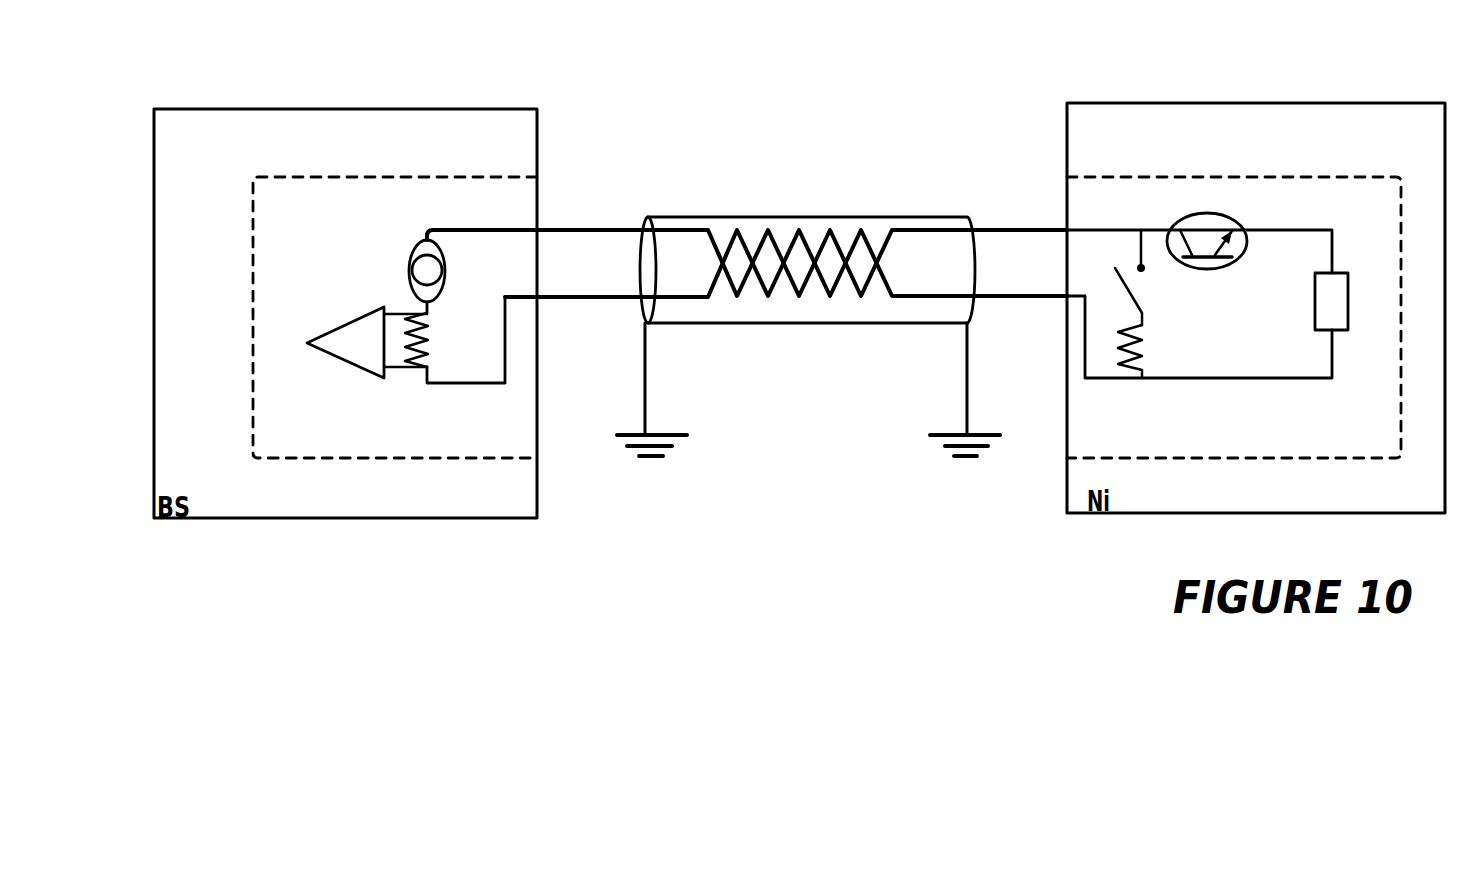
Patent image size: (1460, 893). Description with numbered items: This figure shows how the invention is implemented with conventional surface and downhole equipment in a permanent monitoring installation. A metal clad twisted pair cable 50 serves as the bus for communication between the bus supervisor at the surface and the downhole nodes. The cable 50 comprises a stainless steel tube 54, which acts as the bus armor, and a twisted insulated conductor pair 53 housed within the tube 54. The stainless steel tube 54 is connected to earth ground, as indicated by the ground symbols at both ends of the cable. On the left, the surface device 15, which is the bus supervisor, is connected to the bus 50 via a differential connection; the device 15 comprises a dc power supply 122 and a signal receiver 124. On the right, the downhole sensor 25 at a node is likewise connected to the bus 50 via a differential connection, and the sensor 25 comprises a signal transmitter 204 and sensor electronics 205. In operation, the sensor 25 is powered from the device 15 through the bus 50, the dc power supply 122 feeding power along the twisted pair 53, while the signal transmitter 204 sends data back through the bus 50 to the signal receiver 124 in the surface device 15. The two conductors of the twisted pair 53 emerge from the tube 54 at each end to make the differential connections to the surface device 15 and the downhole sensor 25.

The surface device 15 is at (395, 317).
The downhole sensor 25 is at (1234, 317).
The metal clad twisted pair cable 50 is at (652, 97).
The twisted insulated conductor pair 53 is at (988, 239).
The stainless steel tube 54 is at (905, 217).
The dc power supply 122 is at (385, 264).
The signal receiver 124 is at (352, 343).
The signal transmitter 204 is at (1232, 290).
The sensor electronics 205 is at (1337, 320).